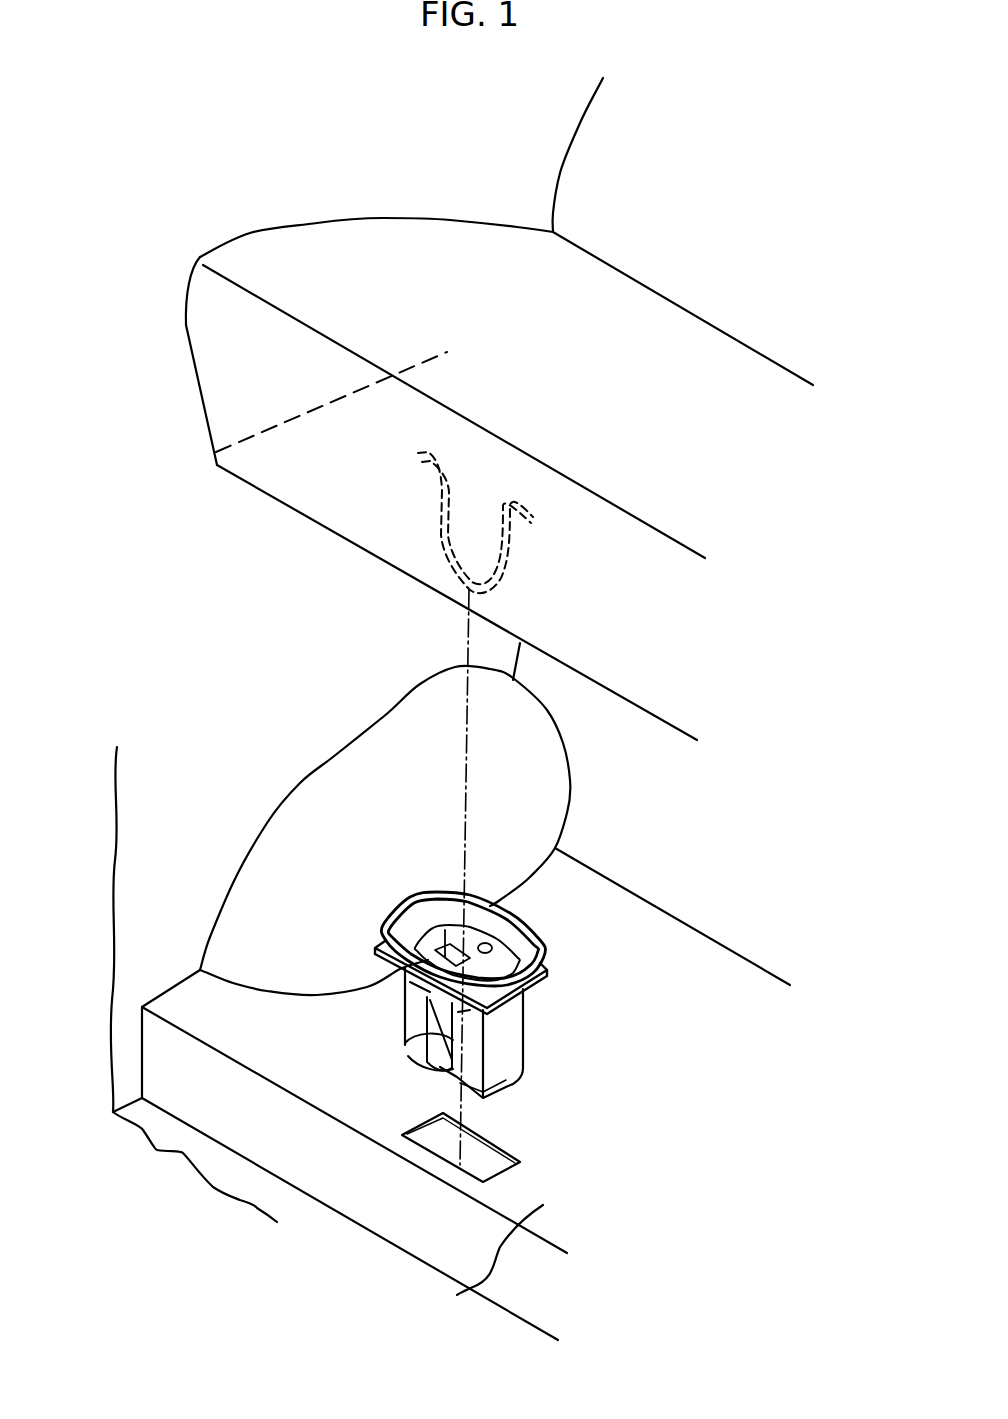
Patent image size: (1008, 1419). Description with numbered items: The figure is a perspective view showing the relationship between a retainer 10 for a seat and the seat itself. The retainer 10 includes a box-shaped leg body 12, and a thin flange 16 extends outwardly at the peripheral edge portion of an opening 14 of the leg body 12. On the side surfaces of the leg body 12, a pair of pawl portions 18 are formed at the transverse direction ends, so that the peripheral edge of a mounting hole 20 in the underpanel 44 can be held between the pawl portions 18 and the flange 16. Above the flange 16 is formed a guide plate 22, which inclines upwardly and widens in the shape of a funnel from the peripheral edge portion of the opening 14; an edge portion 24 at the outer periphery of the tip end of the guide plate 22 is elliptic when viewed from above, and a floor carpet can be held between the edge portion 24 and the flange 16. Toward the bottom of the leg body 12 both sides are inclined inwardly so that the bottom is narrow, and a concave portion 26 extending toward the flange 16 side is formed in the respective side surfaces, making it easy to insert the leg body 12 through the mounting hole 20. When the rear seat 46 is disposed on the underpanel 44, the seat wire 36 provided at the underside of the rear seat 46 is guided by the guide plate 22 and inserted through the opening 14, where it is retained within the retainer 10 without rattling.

The retainer for seat 10 is at (465, 968).
The leg body 12 is at (532, 1027).
The opening 14 is at (492, 943).
The flange 16 is at (382, 943).
The pawl portions 18 is at (413, 980).
The mounting hole 20 is at (493, 1150).
The guide plate 22 is at (413, 920).
The edge portion 24 is at (442, 893).
The concave portion 26 is at (410, 1047).
The seat wire 36 is at (517, 577).
The underpanel 44 is at (470, 1288).
The rear seat 46 is at (430, 250).